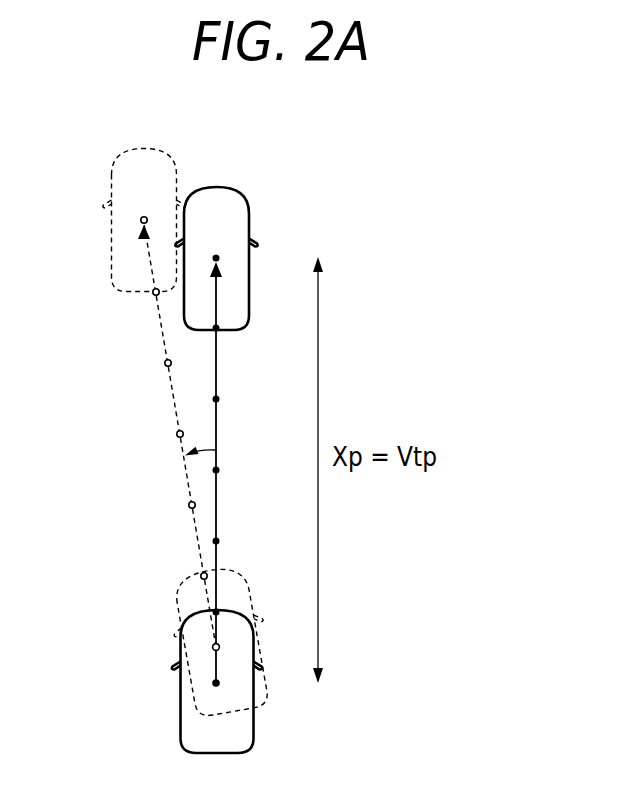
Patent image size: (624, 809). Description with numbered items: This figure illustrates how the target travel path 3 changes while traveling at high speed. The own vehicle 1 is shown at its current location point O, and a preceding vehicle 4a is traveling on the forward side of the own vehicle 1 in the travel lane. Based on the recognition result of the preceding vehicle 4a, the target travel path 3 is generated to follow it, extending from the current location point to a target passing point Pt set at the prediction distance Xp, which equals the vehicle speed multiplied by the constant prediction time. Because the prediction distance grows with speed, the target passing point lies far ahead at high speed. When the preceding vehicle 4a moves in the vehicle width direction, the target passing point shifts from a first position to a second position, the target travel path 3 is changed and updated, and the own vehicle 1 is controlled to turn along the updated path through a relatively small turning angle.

The own vehicle 1 is at (253, 723).
The target travel path 3 is at (165, 352).
The preceding vehicle 4a is at (176, 174).